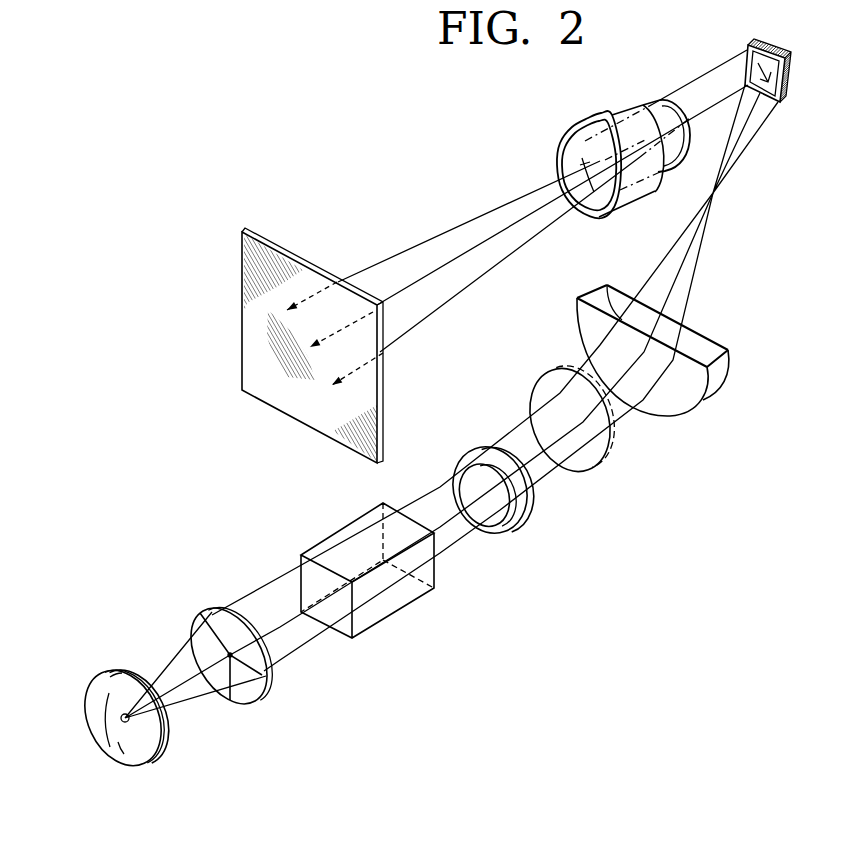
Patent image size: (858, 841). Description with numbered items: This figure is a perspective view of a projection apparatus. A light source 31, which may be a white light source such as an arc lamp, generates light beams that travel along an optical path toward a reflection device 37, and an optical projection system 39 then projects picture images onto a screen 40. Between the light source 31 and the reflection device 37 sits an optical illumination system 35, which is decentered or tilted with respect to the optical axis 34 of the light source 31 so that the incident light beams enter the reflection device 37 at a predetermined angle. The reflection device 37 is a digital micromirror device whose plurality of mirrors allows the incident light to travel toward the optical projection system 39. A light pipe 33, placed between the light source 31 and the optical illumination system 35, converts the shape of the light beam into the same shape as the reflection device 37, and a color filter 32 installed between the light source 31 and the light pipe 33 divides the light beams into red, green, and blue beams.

The light source 31 is at (148, 753).
The color filter 32 is at (257, 695).
The light pipe 33 is at (393, 617).
The optical axis 34 is at (540, 467).
The optical illumination system 35 is at (603, 411).
The reflection device 37 is at (783, 103).
The optical projection system 39 is at (589, 123).
The screen 40 is at (241, 311).